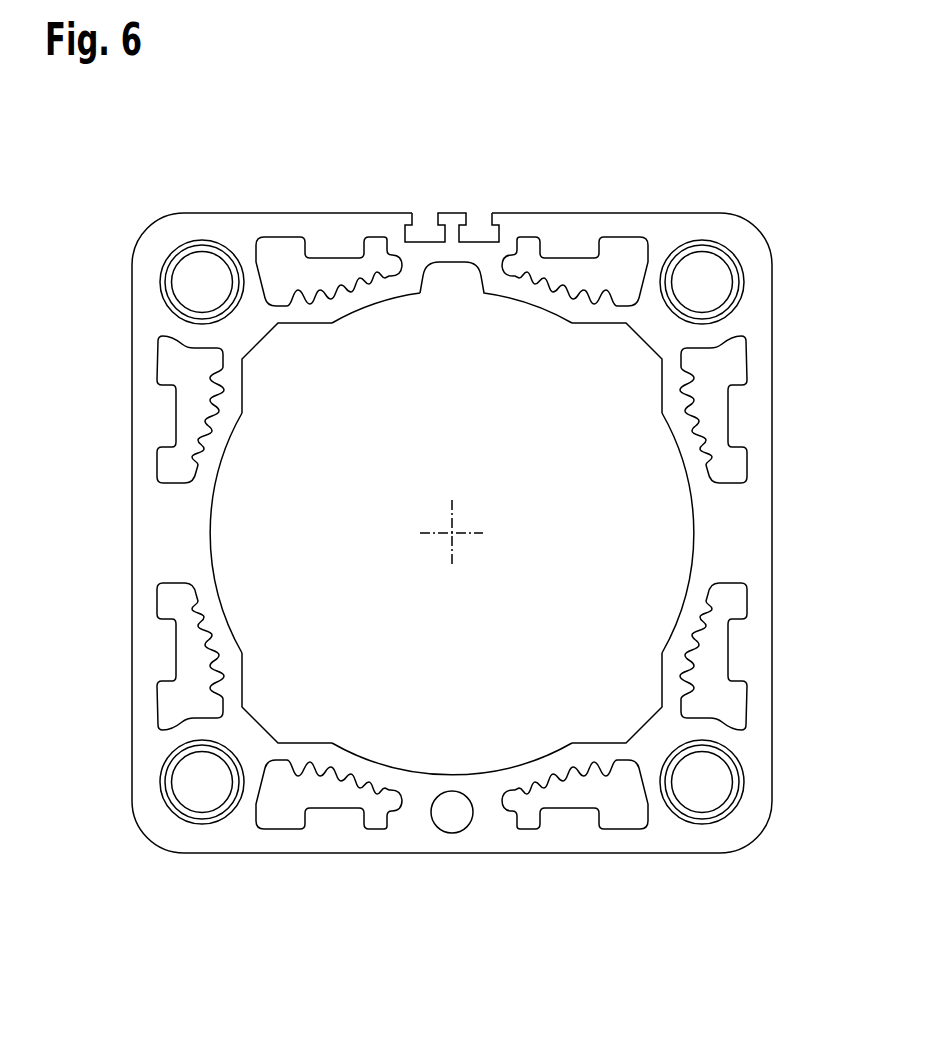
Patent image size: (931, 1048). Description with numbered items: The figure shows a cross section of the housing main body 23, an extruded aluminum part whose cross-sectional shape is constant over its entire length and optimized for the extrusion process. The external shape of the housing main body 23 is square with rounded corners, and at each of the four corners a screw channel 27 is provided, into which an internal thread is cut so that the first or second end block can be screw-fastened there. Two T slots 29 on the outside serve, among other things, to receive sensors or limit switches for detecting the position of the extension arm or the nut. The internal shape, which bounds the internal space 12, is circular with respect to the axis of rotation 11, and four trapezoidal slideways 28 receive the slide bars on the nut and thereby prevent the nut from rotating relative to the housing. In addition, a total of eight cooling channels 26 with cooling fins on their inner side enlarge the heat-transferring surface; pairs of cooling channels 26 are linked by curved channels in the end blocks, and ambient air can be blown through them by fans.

The axis of rotation 11 is at (453, 532).
The internal space 12 is at (672, 502).
The housing main body 23 is at (738, 540).
The cooling channel 26 is at (283, 252).
The screw channel 27 is at (185, 290).
The trapezoidal slideway 28 is at (300, 326).
The T slot 29 is at (422, 228).